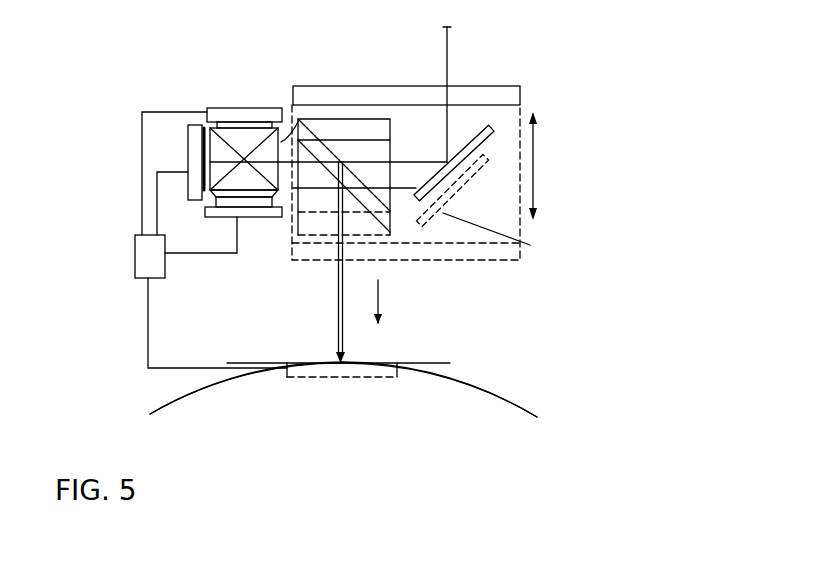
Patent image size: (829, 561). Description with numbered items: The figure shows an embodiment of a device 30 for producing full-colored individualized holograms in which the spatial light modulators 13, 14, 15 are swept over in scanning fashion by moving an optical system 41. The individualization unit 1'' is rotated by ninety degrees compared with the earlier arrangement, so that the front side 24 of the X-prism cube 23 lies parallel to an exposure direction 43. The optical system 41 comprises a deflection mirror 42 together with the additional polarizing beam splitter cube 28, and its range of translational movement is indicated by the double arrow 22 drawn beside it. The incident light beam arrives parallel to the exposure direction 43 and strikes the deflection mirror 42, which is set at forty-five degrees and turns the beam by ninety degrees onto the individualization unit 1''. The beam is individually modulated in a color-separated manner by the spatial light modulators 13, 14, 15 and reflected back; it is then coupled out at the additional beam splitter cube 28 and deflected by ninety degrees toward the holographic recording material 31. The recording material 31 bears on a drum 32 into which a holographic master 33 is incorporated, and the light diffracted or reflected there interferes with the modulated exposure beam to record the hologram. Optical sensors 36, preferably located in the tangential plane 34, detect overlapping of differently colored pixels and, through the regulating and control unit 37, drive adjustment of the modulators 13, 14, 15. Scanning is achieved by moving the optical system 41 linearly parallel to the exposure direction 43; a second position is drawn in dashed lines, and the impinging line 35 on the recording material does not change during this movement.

The device for producing full-colored individualized holograms 30 is at (112, 47).
The individualization unit 1'' is at (214, 204).
The spatial light modulator 14 is at (222, 110).
The X-prism cube 23 is at (252, 138).
The spatial light modulator 15 is at (193, 143).
The spatial light modulator 13 is at (258, 215).
The regulating and control unit 37 is at (135, 262).
The front side of the X-prism cube 24 is at (300, 118).
The additional polarizing beam splitter cube 28 is at (357, 138).
The optical system 41 is at (473, 102).
The movable optical unit 22 is at (533, 192).
The deflection mirror 42 is at (488, 138).
The exposure direction 43 is at (378, 293).
The impinging line 35 is at (345, 361).
The tangential plane 34 is at (440, 363).
The optical sensors 36 is at (375, 375).
The holographic recording material 31 is at (157, 406).
The drum 32 is at (453, 418).
The holographic master 33 is at (198, 400).